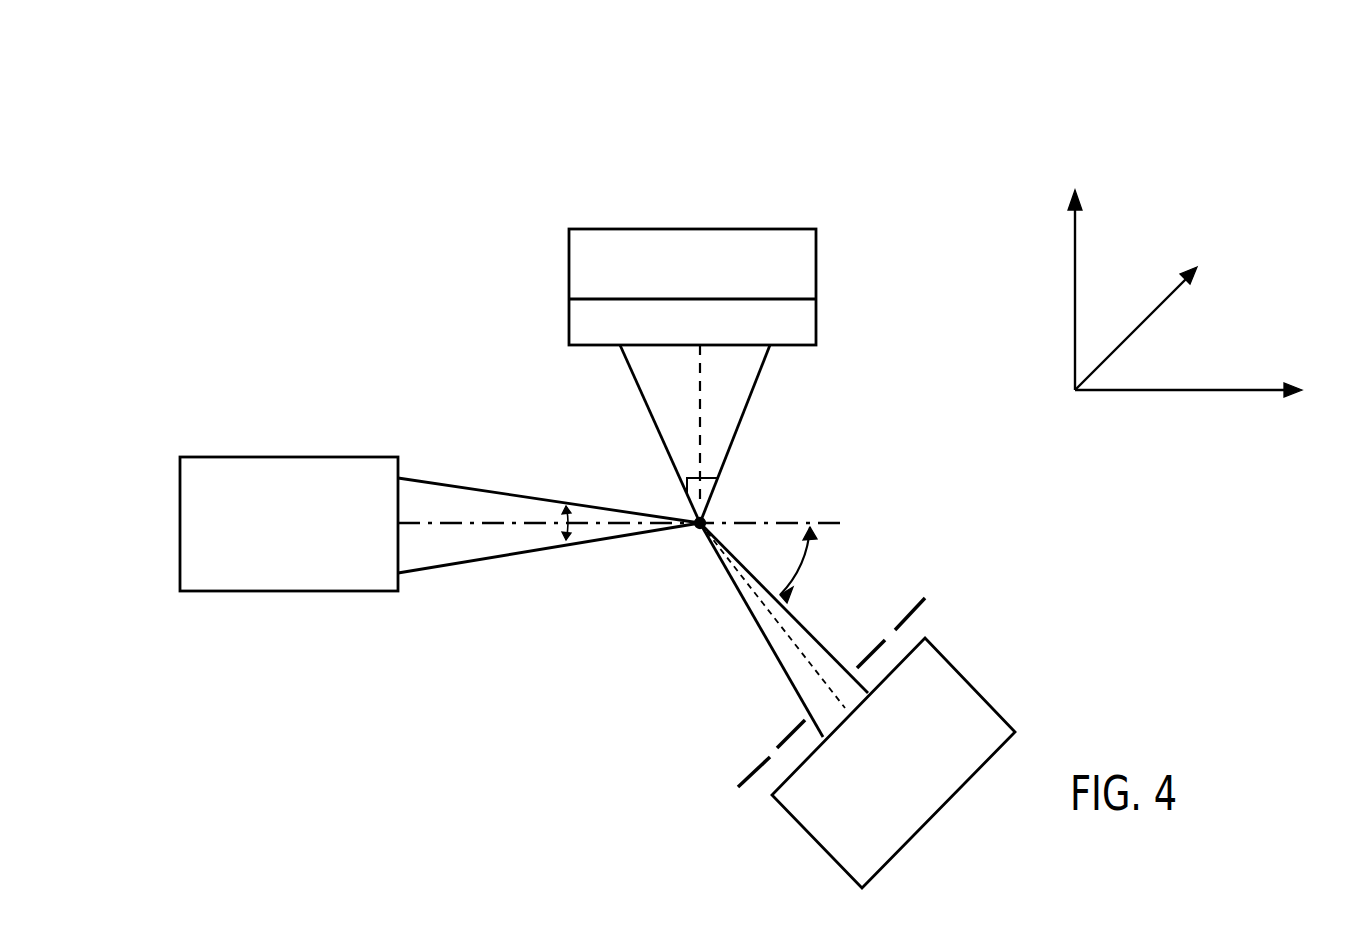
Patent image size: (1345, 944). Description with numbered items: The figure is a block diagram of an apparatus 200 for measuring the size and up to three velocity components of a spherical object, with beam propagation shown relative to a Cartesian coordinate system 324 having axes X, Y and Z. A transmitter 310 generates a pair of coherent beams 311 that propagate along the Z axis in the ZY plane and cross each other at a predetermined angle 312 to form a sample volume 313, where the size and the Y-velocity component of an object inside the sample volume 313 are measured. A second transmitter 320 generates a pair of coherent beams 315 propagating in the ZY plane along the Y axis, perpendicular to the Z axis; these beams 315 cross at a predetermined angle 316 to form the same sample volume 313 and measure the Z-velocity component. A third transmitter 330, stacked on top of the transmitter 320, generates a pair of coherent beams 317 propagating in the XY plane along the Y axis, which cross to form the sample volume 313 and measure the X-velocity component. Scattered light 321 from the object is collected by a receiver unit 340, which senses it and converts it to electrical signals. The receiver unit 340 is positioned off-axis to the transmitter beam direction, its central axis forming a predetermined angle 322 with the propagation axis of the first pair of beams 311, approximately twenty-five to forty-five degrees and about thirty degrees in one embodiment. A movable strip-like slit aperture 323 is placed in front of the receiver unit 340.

The apparatus 200 is at (1168, 238).
The transmitter 310 is at (270, 557).
The pair of coherent beams 311 is at (542, 557).
The predetermined angle 312 is at (562, 505).
The sample volume 313 is at (697, 533).
The pair of coherent beams 315 is at (650, 423).
The predetermined angle 316 is at (710, 470).
The pair of coherent beams 317 is at (700, 418).
The transmitter 320 is at (678, 331).
The scattered light 321 is at (787, 682).
The predetermined angle 322 is at (812, 543).
The movable strip-like slit aperture 323 is at (768, 737).
The Cartesian coordinate system 324 is at (1062, 303).
The transmitter 330 is at (678, 297).
The receiver unit 340 is at (885, 770).